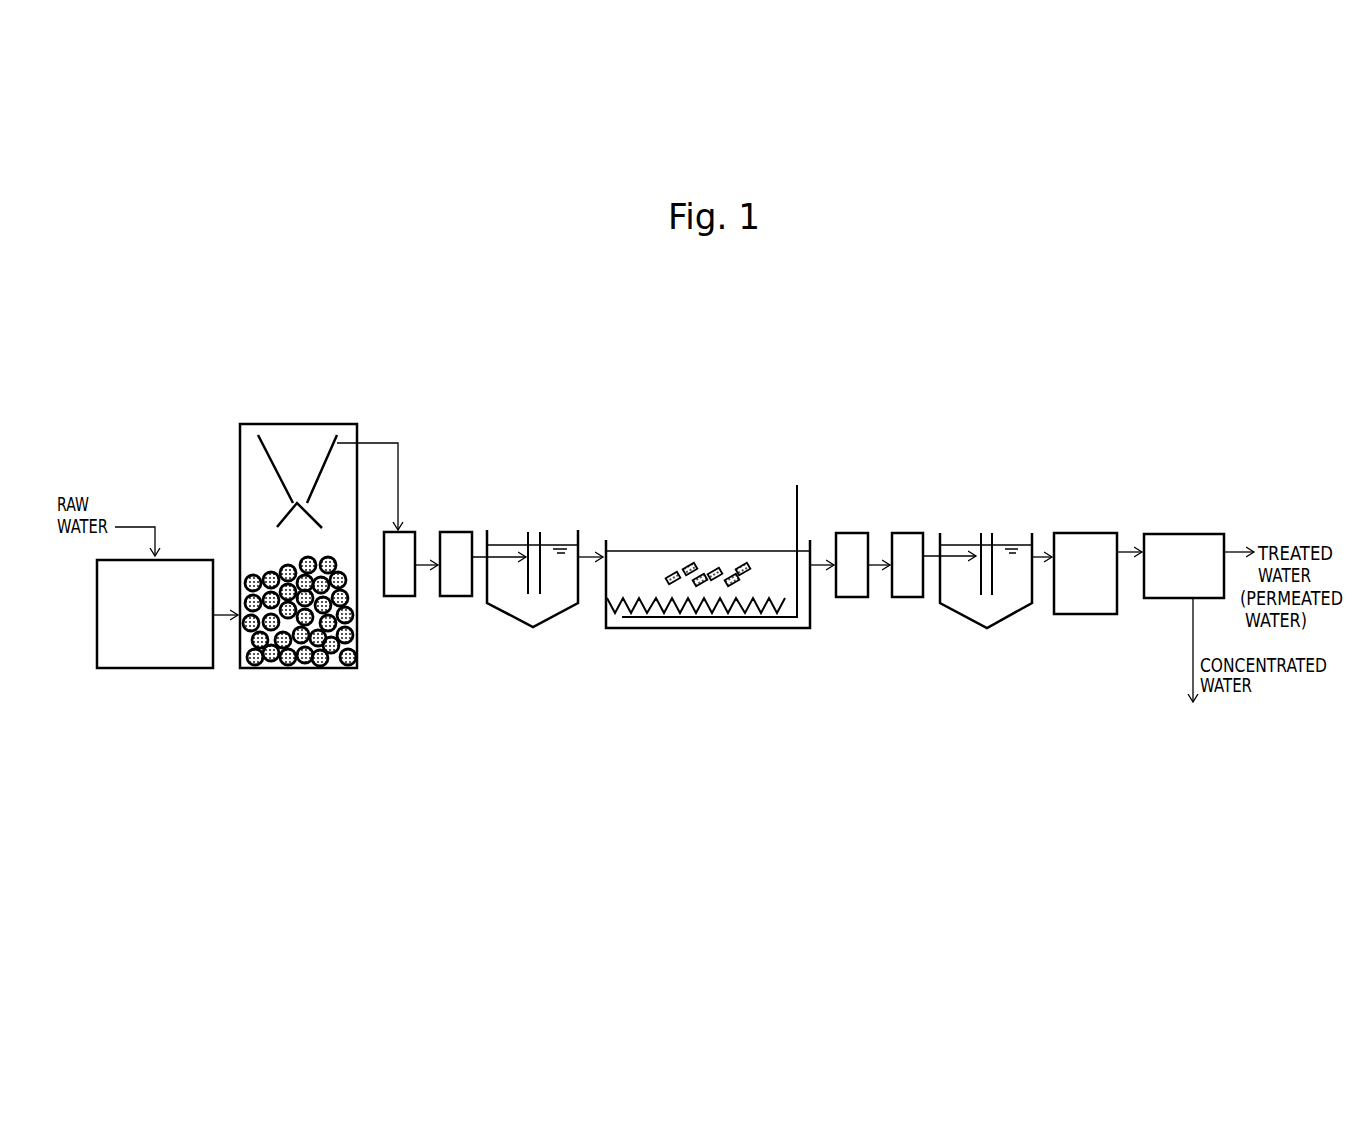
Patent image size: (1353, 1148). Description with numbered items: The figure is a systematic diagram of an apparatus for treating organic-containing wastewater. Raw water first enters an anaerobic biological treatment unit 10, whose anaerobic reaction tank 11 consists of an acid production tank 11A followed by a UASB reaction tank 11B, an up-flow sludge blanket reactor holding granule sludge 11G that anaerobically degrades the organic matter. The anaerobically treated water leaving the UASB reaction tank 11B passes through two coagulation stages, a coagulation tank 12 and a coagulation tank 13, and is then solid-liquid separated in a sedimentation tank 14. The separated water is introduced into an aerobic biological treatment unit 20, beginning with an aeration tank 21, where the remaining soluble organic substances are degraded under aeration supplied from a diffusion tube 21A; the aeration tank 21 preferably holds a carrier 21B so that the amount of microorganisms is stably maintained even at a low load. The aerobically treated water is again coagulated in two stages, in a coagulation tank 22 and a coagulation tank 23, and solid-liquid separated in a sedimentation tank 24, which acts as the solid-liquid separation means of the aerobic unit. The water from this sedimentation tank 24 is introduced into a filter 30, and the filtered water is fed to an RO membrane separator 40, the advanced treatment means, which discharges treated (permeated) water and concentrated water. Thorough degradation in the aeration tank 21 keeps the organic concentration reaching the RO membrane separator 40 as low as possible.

The anaerobic biological treatment unit 10 is at (583, 749).
The anaerobic reaction tank 11 is at (347, 343).
The acid production tank 11A is at (138, 669).
The UASB reaction tank 11B is at (306, 416).
The granule sludge 11G is at (276, 669).
The coagulation tank 12 is at (398, 597).
The coagulation tank 13 is at (459, 531).
The sedimentation tank 14 is at (513, 620).
The aerobic biological treatment unit 20 is at (1077, 749).
The aeration tank 21 is at (668, 630).
The diffusion tube 21A is at (771, 620).
The carrier 21B is at (742, 562).
The coagulation tank 22 is at (852, 532).
The coagulation tank 23 is at (900, 532).
The sedimentation tank 24 is at (970, 630).
The filter 30 is at (1085, 532).
The RO membrane separator 40 is at (1213, 533).